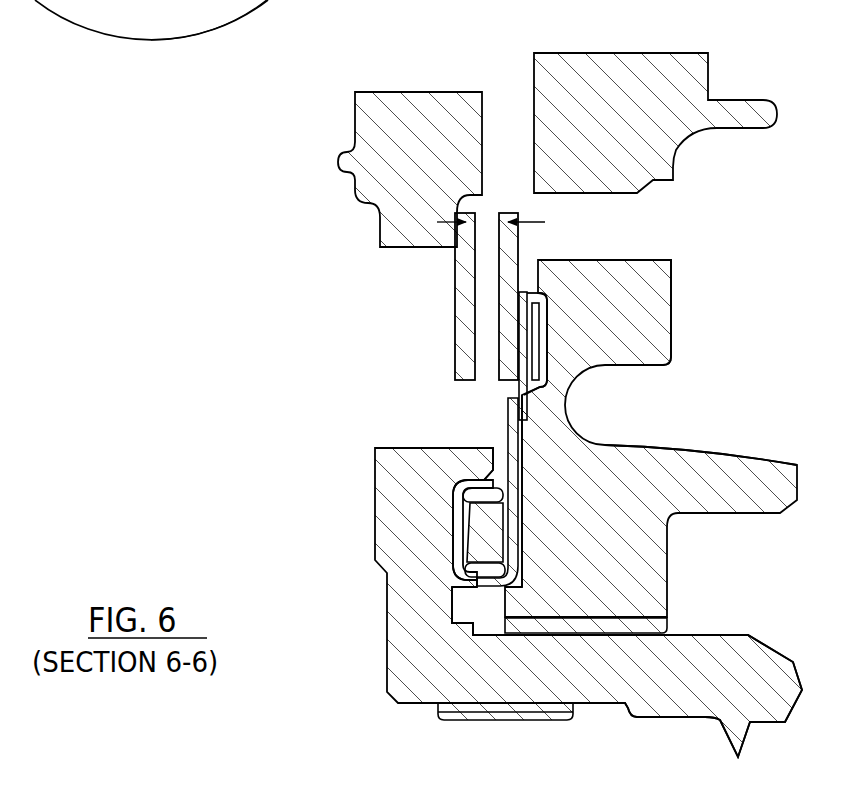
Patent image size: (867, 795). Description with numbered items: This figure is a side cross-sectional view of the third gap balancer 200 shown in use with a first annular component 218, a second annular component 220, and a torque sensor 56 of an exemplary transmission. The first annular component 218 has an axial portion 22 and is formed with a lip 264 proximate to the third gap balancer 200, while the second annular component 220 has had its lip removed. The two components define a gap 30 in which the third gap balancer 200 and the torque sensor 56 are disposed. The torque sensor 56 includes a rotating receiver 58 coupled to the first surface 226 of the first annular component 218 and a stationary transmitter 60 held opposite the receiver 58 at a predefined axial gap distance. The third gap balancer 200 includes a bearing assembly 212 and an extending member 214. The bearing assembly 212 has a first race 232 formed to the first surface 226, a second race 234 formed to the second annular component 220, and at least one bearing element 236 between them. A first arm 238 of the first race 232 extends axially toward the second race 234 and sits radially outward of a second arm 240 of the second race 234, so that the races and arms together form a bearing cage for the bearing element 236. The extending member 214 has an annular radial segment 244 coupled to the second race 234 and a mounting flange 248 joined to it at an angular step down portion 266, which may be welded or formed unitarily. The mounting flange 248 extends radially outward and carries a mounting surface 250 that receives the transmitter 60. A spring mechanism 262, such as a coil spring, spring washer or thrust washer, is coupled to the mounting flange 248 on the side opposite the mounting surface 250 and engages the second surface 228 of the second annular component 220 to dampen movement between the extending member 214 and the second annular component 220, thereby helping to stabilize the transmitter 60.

The axial portion 22 is at (600, 685).
The gap 30 is at (562, 581).
The torque sensor 56 is at (460, 292).
The receiver 58 is at (463, 268).
The transmitter 60 is at (510, 250).
The third gap balancer 200 is at (547, 438).
The bearing assembly 212 is at (530, 509).
The extending member 214 is at (532, 417).
The first annular component 218 is at (457, 112).
The second annular component 220 is at (623, 75).
The first surface 226 is at (448, 626).
The second surface 228 is at (503, 608).
The first race 232 is at (458, 518).
The second race 234 is at (667, 420).
The bearing element 236 is at (483, 538).
The first arm 238 is at (465, 478).
The second arm 240 is at (455, 570).
The radial segment 244 is at (508, 413).
The mounting flange 248 is at (523, 322).
The mounting surface 250 is at (508, 343).
The spring mechanism 262 is at (543, 358).
The lip 264 is at (442, 445).
The step down portion 266 is at (547, 387).